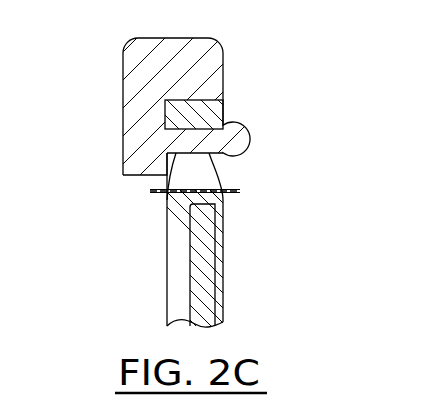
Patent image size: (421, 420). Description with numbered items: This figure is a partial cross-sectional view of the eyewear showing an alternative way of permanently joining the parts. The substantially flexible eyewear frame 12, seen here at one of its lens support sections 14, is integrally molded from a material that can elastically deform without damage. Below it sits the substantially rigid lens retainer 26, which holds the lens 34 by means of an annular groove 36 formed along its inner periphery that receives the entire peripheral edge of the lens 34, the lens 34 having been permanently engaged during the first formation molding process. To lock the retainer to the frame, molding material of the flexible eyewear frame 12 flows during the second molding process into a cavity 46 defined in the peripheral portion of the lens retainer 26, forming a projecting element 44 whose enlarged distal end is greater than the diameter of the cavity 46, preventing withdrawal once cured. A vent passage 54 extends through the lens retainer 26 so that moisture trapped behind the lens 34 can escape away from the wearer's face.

The substantially flexible eyewear frame 12 is at (122, 100).
The lens support section 14 is at (123, 152).
The substantially rigid lens retainer 26 is at (183, 229).
The lens 34 is at (203, 283).
The annular groove 36 is at (200, 204).
The projecting element 44 is at (167, 193).
The cavity 46 is at (223, 203).
The vent passage 54 is at (212, 179).